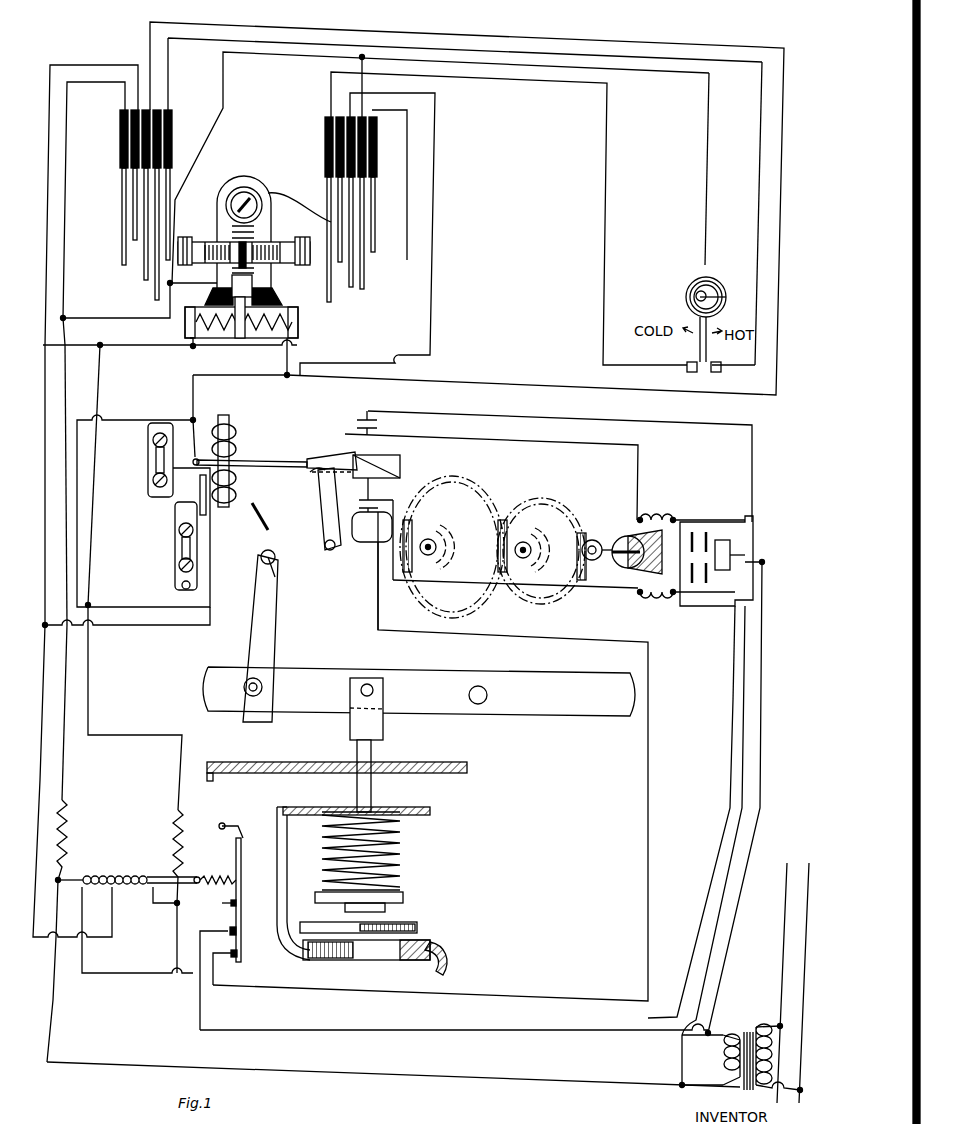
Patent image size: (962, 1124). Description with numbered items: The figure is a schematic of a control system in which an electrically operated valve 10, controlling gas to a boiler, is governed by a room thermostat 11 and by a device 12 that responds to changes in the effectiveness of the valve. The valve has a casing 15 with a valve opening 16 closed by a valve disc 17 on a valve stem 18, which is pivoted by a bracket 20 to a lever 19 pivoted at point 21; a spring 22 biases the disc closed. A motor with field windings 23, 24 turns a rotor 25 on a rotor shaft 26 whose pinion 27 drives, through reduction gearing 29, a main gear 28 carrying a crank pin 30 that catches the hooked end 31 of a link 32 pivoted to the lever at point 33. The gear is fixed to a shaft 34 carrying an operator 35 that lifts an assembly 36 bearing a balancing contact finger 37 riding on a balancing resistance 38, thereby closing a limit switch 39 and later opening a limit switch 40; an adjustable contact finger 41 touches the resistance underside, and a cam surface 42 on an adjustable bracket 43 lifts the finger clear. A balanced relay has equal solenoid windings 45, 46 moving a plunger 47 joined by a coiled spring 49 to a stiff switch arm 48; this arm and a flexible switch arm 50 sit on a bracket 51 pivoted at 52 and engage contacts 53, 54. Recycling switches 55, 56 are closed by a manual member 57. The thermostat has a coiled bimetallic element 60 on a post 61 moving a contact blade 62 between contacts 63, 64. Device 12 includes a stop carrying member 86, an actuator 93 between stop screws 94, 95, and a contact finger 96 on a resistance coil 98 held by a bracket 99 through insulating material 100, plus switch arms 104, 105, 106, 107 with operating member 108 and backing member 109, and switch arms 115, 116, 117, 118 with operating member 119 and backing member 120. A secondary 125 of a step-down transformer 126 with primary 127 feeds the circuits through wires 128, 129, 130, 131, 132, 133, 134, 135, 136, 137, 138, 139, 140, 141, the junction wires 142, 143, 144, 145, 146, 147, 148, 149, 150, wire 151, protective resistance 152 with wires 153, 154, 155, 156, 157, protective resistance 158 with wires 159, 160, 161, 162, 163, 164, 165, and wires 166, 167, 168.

The electrically operated valve 10 is at (468, 898).
The room thermostat 11 is at (675, 262).
The device responsive to changes in effectiveness 12 is at (263, 175).
The valve casing 15 is at (455, 950).
The valve opening 16 is at (368, 957).
The valve disc 17 is at (420, 927).
The valve stem 18 is at (372, 796).
The lever 19 is at (522, 676).
The bracket 20 is at (384, 730).
The pivot point 21 is at (480, 686).
The spring 22 is at (402, 846).
The field winding 23 is at (652, 514).
The field winding 24 is at (652, 598).
The motor rotor 25 is at (638, 535).
The rotor shaft 26 is at (598, 562).
The pinion 27 is at (589, 538).
The main gear 28 is at (345, 615).
The reduction gearing 29 is at (504, 490).
The crank pin 30 is at (276, 572).
The hooked end 31 is at (270, 530).
The link 32 is at (262, 655).
The pivot point 33 is at (248, 692).
The shaft 34 is at (330, 552).
The operator 35 is at (322, 530).
The assembly 36 is at (355, 455).
The balancing contact finger 37 is at (272, 460).
The balancing resistance 38 is at (236, 430).
The limit switch 39 is at (358, 512).
The limit switch 40 is at (357, 422).
The adjustable contact finger 41 is at (196, 456).
The cam surface 42 is at (200, 482).
The adjustable bracket 43 is at (181, 586).
The solenoid winding 45 is at (95, 875).
The solenoid winding 46 is at (133, 875).
The plunger 47 is at (130, 888).
The stiff switch arm 48 is at (222, 905).
The coiled spring 49 is at (212, 876).
The flexible switch arm 50 is at (242, 872).
The bracket 51 is at (241, 826).
The pivot 52 is at (221, 823).
The contact 53 is at (236, 957).
The contact 54 is at (220, 934).
The recycling switch 55 is at (700, 530).
The recycling switch 56 is at (696, 586).
The manually operable member 57 is at (730, 555).
The coiled bimetallic element 60 is at (718, 270).
The post 61 is at (697, 297).
The contact blade 62 is at (697, 348).
The contact 63 is at (722, 370).
The contact 64 is at (682, 372).
The stop carrying member 86 is at (263, 200).
The actuator 93 is at (238, 260).
The adjustable stop screw 94 is at (190, 238).
The adjustable stop screw 95 is at (300, 242).
The contact finger 96 is at (253, 284).
The resistance coil 98 is at (303, 325).
The bracket 99 is at (185, 326).
The insulating material 100 is at (272, 300).
The switch arm 104 is at (121, 205).
The switch arm 105 is at (124, 268).
The switch arm 106 is at (150, 282).
The switch arm 107 is at (165, 182).
The switch operating member 108 is at (147, 300).
The backing member 109 is at (160, 306).
The switch arm 115 is at (373, 252).
The switch arm 116 is at (355, 286).
The switch arm 117 is at (346, 290).
The switch arm 118 is at (320, 220).
The switch operating member 119 is at (333, 313).
The backing member 120 is at (292, 348).
The secondary 125 is at (722, 1058).
The step-down transformer 126 is at (754, 1010).
The high voltage primary 127 is at (781, 1000).
The wire 128 is at (709, 1031).
The wire 129 is at (762, 726).
The wire 130 is at (754, 525).
The wire 131 is at (733, 606).
The wire 132 is at (700, 1090).
The wire 133 is at (731, 776).
The wire 134 is at (683, 518).
The wire 135 is at (680, 600).
The wire 136 is at (640, 462).
The wire 137 is at (385, 410).
The wire 138 is at (598, 590).
The wire 139 is at (575, 645).
The wire 140 is at (480, 1031).
The wire 141 is at (52, 960).
The wire 142 is at (43, 672).
The wire 143 is at (170, 626).
The wire 144 is at (67, 392).
The wire 145 is at (80, 318).
The wire 146 is at (185, 288).
The wire 147 is at (63, 245).
The wire 148 is at (222, 108).
The wire 149 is at (362, 58).
The wire 150 is at (709, 140).
The wire 151 is at (118, 976).
The protective resistance 152 is at (66, 824).
The wire 153 is at (64, 790).
The wire 154 is at (196, 400).
The wire 155 is at (283, 374).
The wire 156 is at (407, 215).
The wire 157 is at (150, 30).
The protective resistance 158 is at (174, 824).
The wire 159 is at (170, 735).
The wire 160 is at (165, 607).
The wire 161 is at (95, 498).
The wire 162 is at (150, 350).
The wire 163 is at (191, 350).
The wire 164 is at (68, 63).
The wire 165 is at (430, 305).
The wire 166 is at (175, 522).
The wire 167 is at (330, 101).
The wire 168 is at (757, 210).